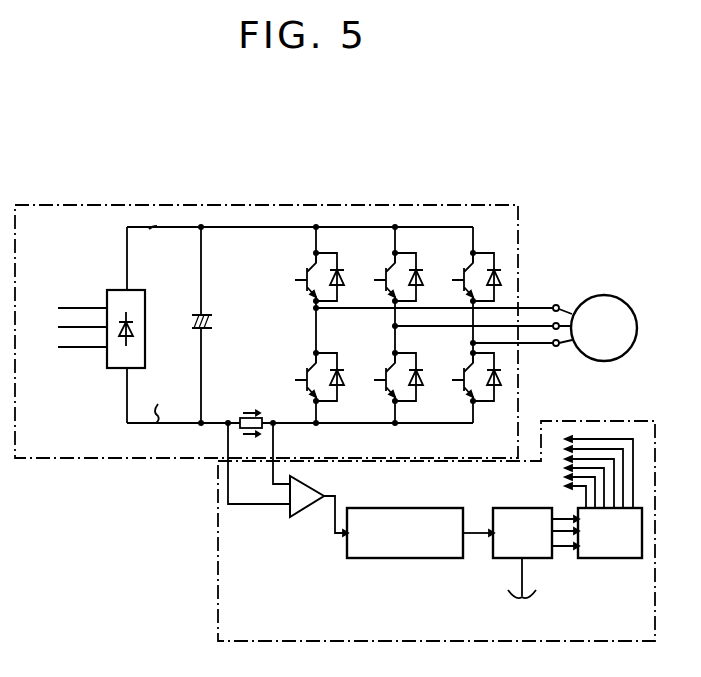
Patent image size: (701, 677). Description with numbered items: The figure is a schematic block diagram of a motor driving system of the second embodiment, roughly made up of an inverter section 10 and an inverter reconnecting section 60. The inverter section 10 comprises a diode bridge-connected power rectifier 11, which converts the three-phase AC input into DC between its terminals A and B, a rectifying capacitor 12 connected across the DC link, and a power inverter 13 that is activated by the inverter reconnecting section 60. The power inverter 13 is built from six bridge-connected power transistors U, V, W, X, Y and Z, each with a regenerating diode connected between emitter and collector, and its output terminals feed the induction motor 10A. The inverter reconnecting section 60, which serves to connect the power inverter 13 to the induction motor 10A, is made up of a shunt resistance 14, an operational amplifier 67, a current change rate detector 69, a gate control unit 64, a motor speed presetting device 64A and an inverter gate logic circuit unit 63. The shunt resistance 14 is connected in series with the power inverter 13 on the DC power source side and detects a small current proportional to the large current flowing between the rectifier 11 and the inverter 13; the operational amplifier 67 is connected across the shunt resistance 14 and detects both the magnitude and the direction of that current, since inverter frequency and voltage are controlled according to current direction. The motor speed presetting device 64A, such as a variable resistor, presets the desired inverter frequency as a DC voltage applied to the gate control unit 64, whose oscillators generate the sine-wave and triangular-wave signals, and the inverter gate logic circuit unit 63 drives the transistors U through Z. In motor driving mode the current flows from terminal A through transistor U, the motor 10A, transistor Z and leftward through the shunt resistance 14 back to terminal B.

The inverter section 10 is at (458, 205).
The induction motor 10A is at (604, 295).
The power rectifier 11 is at (117, 290).
The rectifying capacitor 12 is at (212, 323).
The power inverter 13 is at (303, 318).
The shunt resistance 14 is at (240, 427).
The inverter reconnecting section 60 is at (580, 421).
The inverter gate logic circuit unit 63 is at (607, 558).
The gate control unit 64 is at (521, 508).
The motor speed presetting device 64A is at (527, 599).
The operational amplifier 67 is at (310, 517).
The current change rate detector 69 is at (386, 508).